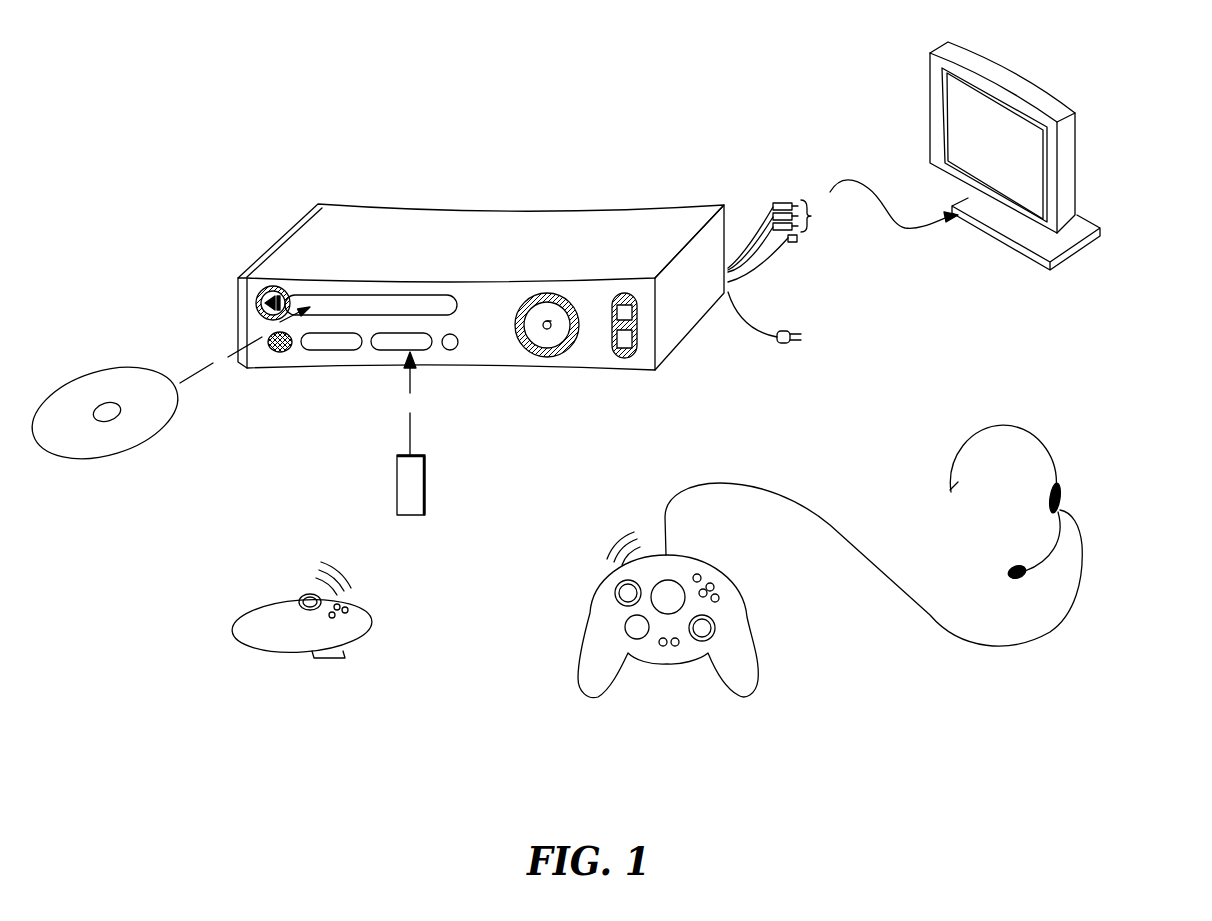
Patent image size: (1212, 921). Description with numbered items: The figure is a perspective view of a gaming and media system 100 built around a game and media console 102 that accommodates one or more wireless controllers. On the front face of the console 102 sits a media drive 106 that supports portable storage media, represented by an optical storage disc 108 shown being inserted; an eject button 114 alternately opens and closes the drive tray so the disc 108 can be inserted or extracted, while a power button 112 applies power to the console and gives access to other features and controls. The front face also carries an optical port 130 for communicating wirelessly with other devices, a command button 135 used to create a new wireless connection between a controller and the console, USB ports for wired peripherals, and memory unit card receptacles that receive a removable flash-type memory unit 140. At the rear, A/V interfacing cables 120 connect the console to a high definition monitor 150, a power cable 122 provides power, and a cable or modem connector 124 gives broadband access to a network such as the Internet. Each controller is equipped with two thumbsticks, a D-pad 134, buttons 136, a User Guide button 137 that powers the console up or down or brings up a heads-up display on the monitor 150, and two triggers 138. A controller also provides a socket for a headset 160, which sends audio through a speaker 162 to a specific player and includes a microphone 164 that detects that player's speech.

The gaming and media system 100 is at (513, 170).
The game and media console 102 is at (360, 215).
The media drive 106 is at (380, 294).
The optical storage disc 108 is at (117, 457).
The power button 112 is at (547, 357).
The eject button 114 is at (262, 302).
The A/V interfacing cables 120 is at (780, 202).
The power cable 122 is at (780, 344).
The cable or modem connector 124 is at (793, 243).
The optical port 130 is at (278, 350).
The D-pad 134 is at (624, 627).
The command button 135 is at (450, 352).
The buttons 136 is at (716, 587).
The User Guide button 137 is at (672, 580).
The trigger 138 is at (341, 659).
The removable flash-type memory unit 140 is at (410, 515).
The high definition monitor 150 is at (930, 110).
The headset 160 is at (1050, 442).
The speaker 162 is at (1062, 498).
The microphone 164 is at (1012, 568).